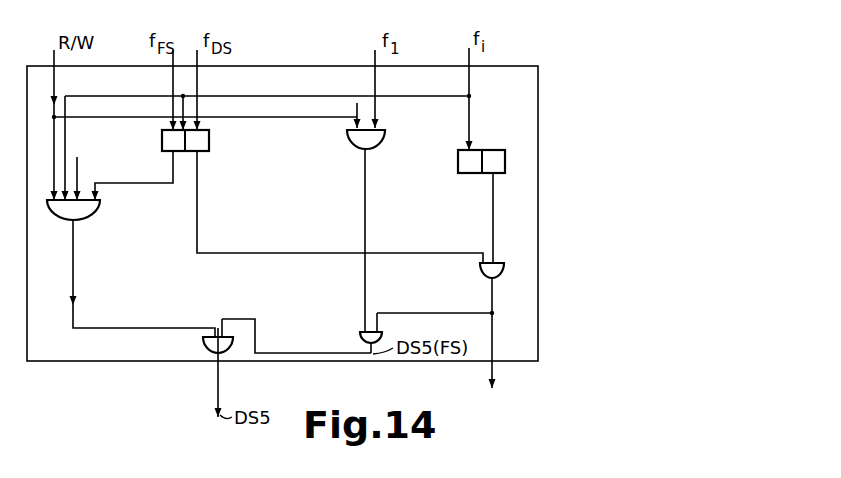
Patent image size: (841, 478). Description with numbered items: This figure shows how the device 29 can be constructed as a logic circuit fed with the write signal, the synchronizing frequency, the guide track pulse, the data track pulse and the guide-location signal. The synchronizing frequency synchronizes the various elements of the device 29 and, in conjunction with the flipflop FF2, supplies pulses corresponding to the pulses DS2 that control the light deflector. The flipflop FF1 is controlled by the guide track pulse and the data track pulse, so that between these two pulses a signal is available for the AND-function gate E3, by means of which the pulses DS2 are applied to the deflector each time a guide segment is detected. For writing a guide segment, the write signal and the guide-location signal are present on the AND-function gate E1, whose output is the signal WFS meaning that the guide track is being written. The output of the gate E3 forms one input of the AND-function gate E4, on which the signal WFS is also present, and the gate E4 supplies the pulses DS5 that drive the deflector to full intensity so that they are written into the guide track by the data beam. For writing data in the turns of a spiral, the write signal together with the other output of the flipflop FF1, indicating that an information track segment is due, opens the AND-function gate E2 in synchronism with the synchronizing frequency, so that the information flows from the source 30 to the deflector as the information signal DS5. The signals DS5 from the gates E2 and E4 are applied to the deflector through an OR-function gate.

The device 29 is at (529, 300).
The information source 30 is at (91, 175).
The flipflop FF1 is at (209, 140).
The flipflop FF2 is at (505, 163).
The AND-function gate E1 is at (385, 139).
The AND-function gate E2 is at (96, 216).
The AND-function gate E3 is at (504, 274).
The AND-function gate E4 is at (360, 338).
The guide track writing signal WFS is at (366, 241).
The deflector control pulses DS5 is at (75, 304).
The deflector control pulses DS2 is at (494, 386).